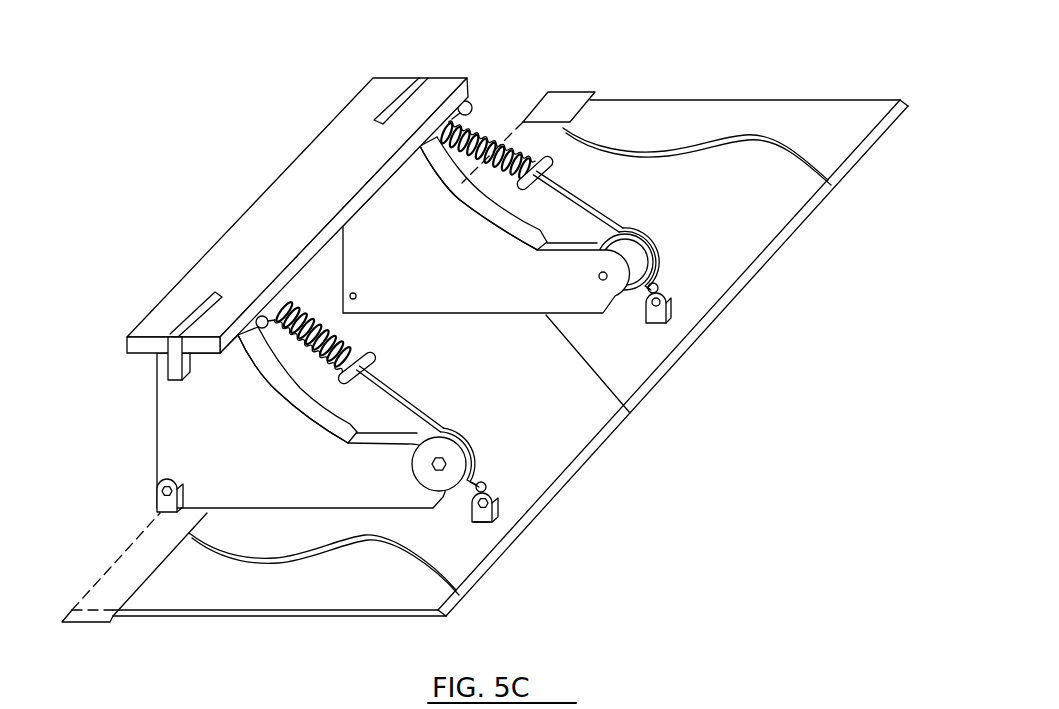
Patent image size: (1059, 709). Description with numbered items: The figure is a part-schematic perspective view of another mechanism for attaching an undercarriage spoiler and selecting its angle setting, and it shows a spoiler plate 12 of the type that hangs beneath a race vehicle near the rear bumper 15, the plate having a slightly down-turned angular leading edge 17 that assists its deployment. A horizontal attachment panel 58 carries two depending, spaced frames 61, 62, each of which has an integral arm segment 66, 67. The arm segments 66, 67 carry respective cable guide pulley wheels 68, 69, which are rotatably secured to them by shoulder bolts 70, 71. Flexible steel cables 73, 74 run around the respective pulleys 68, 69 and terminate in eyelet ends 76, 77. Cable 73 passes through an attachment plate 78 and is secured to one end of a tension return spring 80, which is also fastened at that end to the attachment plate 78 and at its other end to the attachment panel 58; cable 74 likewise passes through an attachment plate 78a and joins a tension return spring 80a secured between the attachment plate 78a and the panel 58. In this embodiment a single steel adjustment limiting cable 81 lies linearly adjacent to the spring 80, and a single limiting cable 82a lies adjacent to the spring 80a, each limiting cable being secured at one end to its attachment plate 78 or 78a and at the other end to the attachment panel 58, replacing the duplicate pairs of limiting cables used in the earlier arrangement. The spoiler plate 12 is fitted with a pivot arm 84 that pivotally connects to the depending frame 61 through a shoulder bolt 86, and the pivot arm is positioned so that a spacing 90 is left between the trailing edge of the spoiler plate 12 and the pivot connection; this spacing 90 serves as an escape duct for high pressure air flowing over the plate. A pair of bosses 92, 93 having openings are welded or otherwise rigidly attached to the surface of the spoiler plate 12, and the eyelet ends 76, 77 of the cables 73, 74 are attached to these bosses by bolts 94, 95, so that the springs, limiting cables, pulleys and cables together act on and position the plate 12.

The spoiler plate 12 is at (780, 122).
The rear bumper 15 is at (733, 707).
The angular leading edge 17 is at (523, 535).
The horizontal attachment panel 58 is at (315, 137).
The depending frame 61 is at (157, 451).
The depending frame 62 is at (342, 253).
The arm segment 66 is at (372, 556).
The arm segment 67 is at (630, 412).
The pulley wheel 68 is at (473, 438).
The pulley wheel 69 is at (655, 237).
The shoulder bolt 70 is at (430, 465).
The shoulder bolt 71 is at (600, 278).
The flexible steel cable 73 is at (400, 400).
The flexible steel cable 74 is at (587, 207).
The eyelet end 76 is at (484, 489).
The eyelet end 77 is at (657, 286).
The attachment plate 78 is at (372, 358).
The attachment plate 78a is at (553, 160).
The tension return spring 80 is at (330, 380).
The tension return spring 80a is at (471, 180).
The limiting cable 81 is at (267, 330).
The limiting cable 82a is at (477, 113).
The pivot arm 84 is at (160, 505).
The shoulder bolt 86 is at (352, 293).
The spacing 90 is at (565, 92).
The boss 92 is at (498, 512).
The boss 93 is at (672, 312).
The bolt 94 is at (485, 522).
The bolt 95 is at (660, 304).